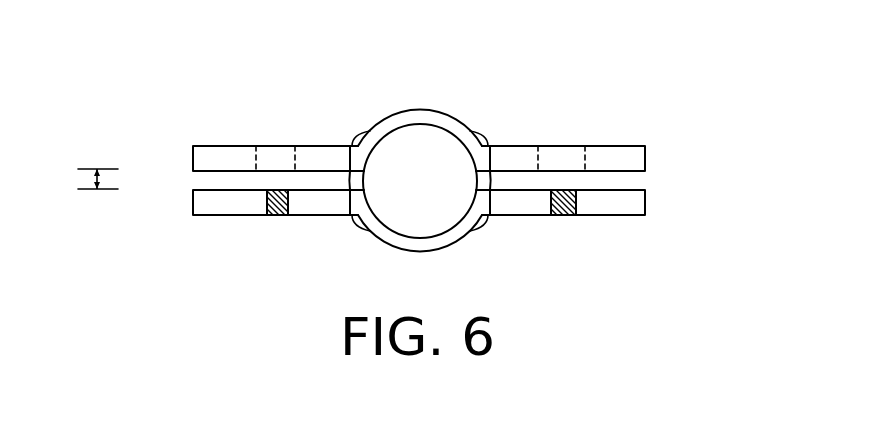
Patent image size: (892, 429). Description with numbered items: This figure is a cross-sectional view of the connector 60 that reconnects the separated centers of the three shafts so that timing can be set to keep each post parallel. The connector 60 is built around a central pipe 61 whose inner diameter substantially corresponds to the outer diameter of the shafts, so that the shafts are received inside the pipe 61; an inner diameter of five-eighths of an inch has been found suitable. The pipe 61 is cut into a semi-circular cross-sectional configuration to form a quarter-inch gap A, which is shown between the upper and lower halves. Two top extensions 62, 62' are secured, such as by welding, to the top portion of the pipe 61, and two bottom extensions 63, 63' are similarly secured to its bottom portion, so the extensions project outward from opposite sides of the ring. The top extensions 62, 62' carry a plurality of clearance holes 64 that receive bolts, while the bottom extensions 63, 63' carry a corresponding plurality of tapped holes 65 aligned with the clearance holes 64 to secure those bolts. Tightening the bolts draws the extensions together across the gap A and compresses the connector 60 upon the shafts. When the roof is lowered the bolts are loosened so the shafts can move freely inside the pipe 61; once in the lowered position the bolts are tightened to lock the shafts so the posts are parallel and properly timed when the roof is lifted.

The connector 60 is at (403, 161).
The central pipe 61 is at (398, 237).
The top extension 62 is at (260, 138).
The top extension 62' is at (601, 147).
The bottom extension 63 is at (259, 224).
The bottom extension 63' is at (602, 212).
The clearance holes 64 is at (283, 156).
The tapped holes 65 is at (276, 216).
The gap A is at (98, 196).